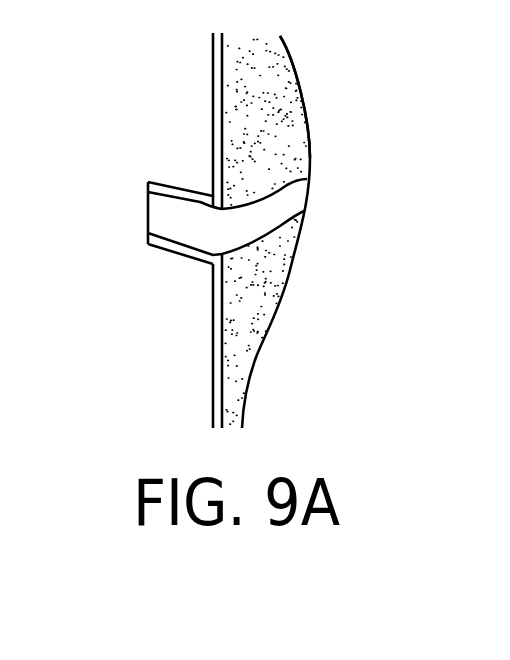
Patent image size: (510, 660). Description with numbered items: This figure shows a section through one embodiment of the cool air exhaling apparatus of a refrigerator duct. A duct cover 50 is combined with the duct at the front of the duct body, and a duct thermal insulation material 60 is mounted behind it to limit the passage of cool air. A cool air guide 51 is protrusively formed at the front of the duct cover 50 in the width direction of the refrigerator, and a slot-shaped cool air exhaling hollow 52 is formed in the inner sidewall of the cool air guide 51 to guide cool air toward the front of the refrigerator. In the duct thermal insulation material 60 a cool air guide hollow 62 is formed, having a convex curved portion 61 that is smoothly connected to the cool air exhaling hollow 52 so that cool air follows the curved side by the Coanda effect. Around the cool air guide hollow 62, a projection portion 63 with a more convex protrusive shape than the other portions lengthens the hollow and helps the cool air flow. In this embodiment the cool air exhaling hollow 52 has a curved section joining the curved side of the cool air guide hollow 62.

The duct cover 50 is at (213, 363).
The cool air guide 51 is at (173, 183).
The cool air exhaling hollow 52 is at (167, 217).
The duct thermal insulation material 60 is at (233, 394).
The convex curved portion 61 is at (285, 186).
The cool air guide hollow 62 is at (257, 230).
The projection portion 63 is at (303, 87).